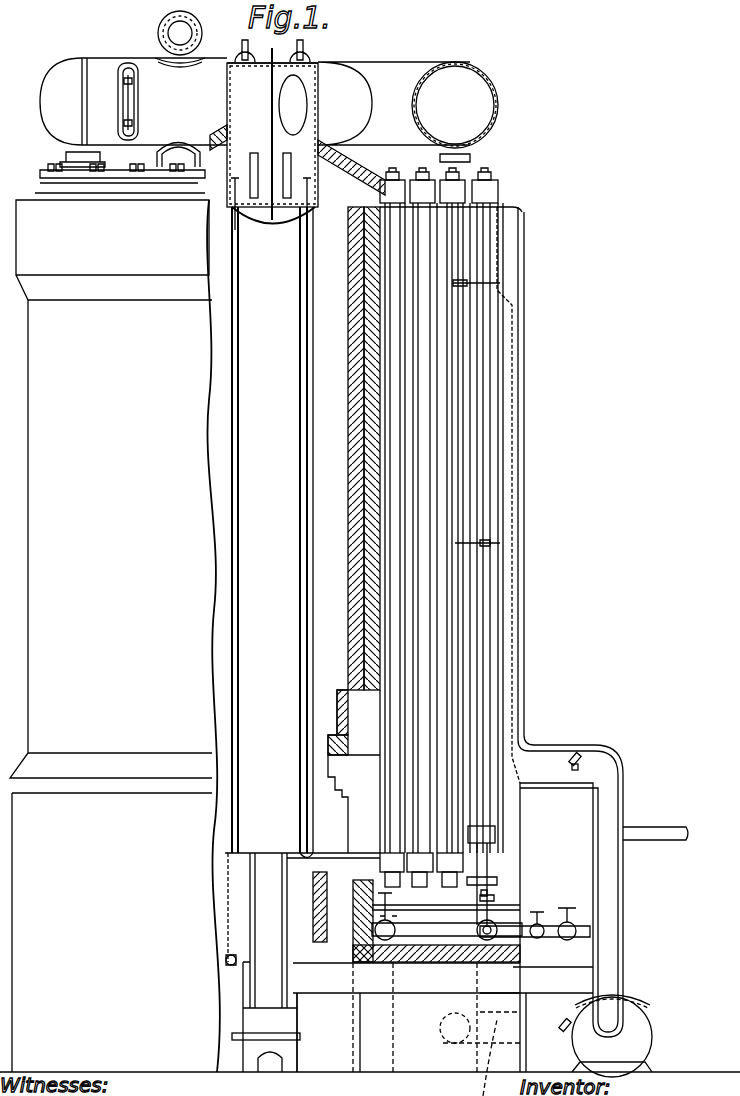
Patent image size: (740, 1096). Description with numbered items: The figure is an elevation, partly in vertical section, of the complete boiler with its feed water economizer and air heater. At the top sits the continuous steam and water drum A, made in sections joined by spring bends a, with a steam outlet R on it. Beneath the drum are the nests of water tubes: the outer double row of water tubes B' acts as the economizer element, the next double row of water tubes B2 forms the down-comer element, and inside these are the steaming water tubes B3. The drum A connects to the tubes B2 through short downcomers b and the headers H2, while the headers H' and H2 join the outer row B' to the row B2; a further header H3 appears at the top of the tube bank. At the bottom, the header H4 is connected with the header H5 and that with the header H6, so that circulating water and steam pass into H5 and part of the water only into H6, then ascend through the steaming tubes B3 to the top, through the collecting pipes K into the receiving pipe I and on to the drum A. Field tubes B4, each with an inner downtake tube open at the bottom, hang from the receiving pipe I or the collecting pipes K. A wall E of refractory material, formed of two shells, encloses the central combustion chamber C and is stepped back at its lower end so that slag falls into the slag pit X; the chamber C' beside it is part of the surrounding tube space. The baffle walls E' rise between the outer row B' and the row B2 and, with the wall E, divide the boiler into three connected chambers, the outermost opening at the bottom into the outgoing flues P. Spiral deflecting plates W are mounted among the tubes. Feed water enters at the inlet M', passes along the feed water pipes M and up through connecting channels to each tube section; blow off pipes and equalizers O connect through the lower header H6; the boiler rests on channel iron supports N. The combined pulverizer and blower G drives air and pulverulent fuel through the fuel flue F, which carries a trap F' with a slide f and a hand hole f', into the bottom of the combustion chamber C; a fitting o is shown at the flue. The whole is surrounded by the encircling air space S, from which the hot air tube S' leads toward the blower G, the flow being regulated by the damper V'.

The continuous steam and water drum A is at (290, 103).
The spring bend a is at (61, 101).
The steam outlet R is at (170, 38).
The downcomer b is at (66, 155).
The receiving pipe I is at (272, 135).
The collecting pipe K is at (295, 184).
The header H3 is at (420, 185).
The header H2 is at (452, 197).
The header H' is at (511, 185).
The Field water tube B4 is at (240, 485).
The central combustion chamber C is at (259, 532).
The chamber C' is at (322, 530).
The wall of refractory material E is at (350, 530).
The steaming water tube B3 is at (402, 475).
The water tube B2 is at (447, 358).
The baffle wall E' is at (529, 528).
The water tube B' is at (485, 528).
The spiral deflecting plate W is at (487, 283).
The encircling air space S is at (546, 495).
The hot air tube S' is at (601, 891).
The header H4 is at (492, 860).
The header H5 is at (480, 850).
The header H6 is at (482, 812).
The outgoing flue P is at (489, 884).
The channel iron support N is at (447, 916).
The feed water pipe M is at (518, 883).
The blow off pipe and equalizer O is at (588, 930).
The feed water inlet M' is at (612, 918).
The fuel flue F is at (372, 962).
The trap F' is at (270, 1020).
The slag pit X is at (314, 1032).
The slide f is at (283, 1041).
The hand hole f' is at (270, 1060).
The fitting o is at (226, 960).
The damper V' is at (558, 1039).
The combined fuel pulverizer and blower G is at (612, 1036).